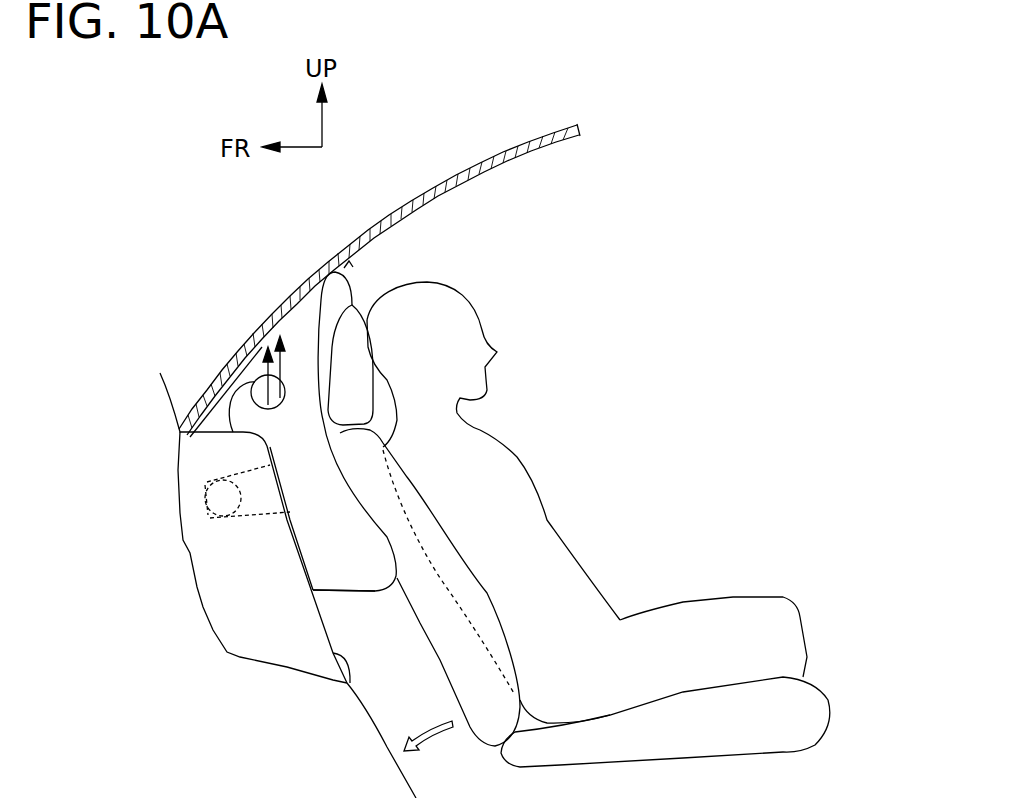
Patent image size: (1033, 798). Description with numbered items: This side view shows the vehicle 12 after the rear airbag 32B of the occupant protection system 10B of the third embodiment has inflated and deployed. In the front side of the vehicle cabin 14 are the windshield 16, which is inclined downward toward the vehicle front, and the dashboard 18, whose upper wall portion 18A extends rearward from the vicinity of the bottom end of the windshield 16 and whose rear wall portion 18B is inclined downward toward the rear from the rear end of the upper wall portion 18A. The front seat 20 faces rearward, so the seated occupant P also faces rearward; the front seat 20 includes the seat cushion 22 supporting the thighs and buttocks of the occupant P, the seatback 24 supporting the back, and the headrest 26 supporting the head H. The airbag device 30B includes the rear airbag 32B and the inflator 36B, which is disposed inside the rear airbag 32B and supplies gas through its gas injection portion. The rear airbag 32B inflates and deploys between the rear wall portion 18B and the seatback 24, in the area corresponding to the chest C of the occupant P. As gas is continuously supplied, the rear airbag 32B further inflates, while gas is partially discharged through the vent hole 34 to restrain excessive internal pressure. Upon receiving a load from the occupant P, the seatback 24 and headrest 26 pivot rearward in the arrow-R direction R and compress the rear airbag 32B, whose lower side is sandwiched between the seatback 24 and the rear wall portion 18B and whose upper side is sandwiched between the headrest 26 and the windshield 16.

The vehicle 12 is at (188, 183).
The vehicle cabin 14 is at (438, 219).
The front windshield glass 16 is at (527, 145).
The occupant protection system 10B is at (349, 262).
The dashboard 18 is at (160, 378).
The upper wall portion 18A is at (207, 430).
The rear wall portion 18B is at (343, 688).
The front seat 20 is at (609, 613).
The seat cushion 22 is at (810, 727).
The seatback 24 is at (483, 745).
The headrest 26 is at (354, 304).
The airbag device 30B is at (337, 606).
The rear airbag 32B is at (367, 583).
The vent hole 34 is at (200, 430).
The inflator 36B is at (190, 520).
The occupant P is at (587, 484).
The head H is at (447, 293).
The chest C is at (515, 478).
The arrow-R direction R is at (428, 721).